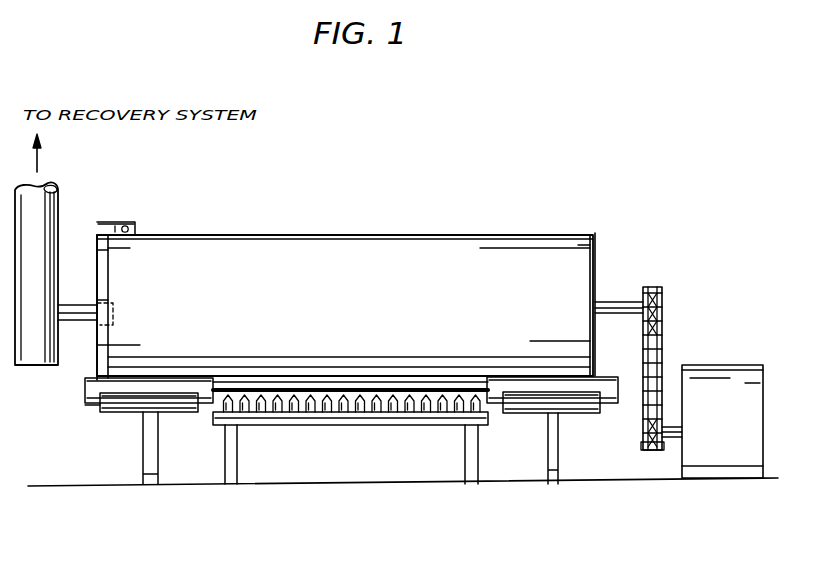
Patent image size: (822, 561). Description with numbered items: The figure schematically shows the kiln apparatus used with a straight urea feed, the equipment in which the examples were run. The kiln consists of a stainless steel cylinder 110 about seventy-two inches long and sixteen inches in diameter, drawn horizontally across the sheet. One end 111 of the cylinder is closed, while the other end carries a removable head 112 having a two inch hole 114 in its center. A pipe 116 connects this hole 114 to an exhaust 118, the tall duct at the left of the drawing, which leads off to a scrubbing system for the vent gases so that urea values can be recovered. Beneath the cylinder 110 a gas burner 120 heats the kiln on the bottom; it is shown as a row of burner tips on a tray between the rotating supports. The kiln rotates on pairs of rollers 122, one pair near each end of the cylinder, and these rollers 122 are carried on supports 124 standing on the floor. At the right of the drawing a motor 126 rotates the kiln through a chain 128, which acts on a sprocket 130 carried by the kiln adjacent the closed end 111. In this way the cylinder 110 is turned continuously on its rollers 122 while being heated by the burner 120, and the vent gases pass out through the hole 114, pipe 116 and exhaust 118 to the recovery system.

The stainless steel cylinder 110 is at (496, 234).
The closed end 111 is at (593, 249).
The removable head 112 is at (97, 239).
The hole 114 is at (112, 326).
The pipe 116 is at (80, 325).
The exhaust 118 is at (48, 215).
The gas burner 120 is at (348, 421).
The rollers 122 is at (103, 407).
The supports 124 is at (158, 453).
The motor 126 is at (712, 453).
The chain 128 is at (662, 356).
The sprocket 130 is at (662, 304).